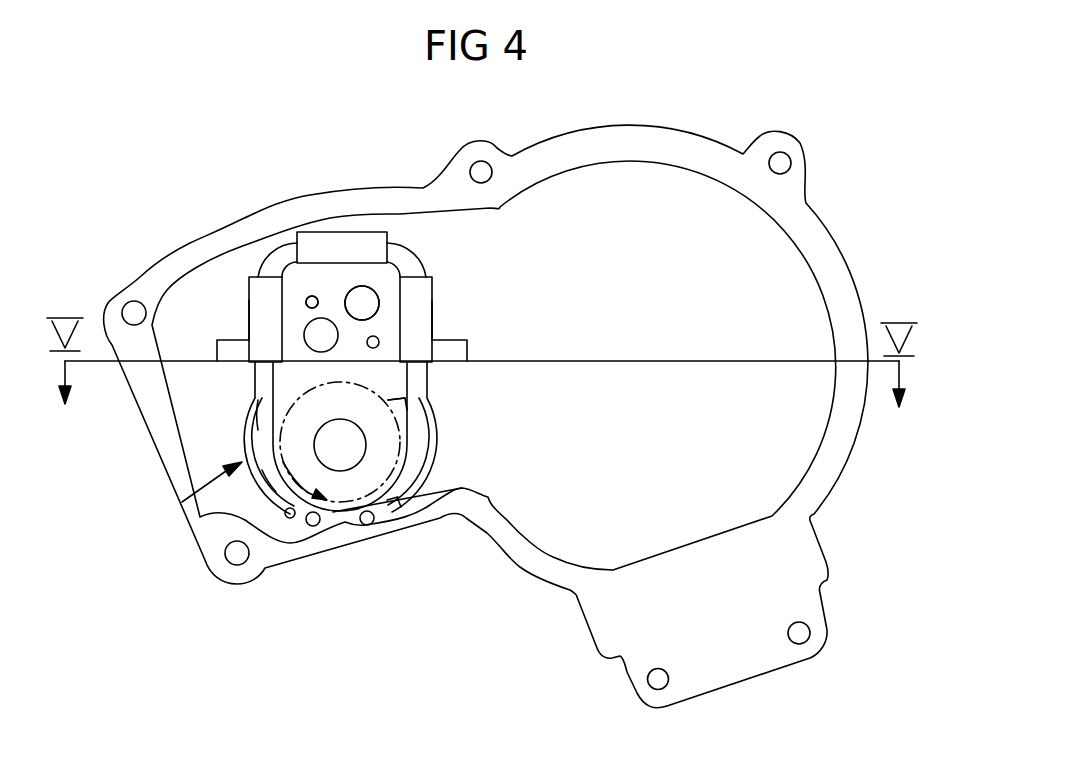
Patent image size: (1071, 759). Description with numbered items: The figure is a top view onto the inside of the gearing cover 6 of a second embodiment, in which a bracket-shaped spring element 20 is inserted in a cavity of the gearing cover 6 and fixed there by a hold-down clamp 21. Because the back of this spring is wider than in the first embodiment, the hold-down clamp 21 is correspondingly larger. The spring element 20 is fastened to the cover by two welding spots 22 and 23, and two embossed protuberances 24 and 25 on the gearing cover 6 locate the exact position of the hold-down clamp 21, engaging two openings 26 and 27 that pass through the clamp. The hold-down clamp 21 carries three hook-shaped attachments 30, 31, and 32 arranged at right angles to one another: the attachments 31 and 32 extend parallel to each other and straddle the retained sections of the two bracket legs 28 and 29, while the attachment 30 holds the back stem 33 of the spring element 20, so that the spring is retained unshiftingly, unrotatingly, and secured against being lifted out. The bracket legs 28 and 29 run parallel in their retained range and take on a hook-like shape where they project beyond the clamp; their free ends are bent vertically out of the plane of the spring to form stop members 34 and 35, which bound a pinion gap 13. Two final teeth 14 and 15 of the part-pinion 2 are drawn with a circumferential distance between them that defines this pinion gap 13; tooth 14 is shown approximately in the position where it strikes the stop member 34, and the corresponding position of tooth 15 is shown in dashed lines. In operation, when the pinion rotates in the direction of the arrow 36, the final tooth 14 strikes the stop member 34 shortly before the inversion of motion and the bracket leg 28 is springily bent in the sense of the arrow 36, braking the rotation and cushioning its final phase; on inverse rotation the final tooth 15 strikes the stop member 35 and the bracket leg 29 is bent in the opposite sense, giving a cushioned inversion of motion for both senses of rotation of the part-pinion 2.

The part-pinion 2 is at (342, 493).
The gearing cover 6 is at (157, 437).
The pinion gap 13 is at (323, 510).
The final tooth 14 is at (290, 513).
The final tooth 15 is at (420, 447).
The spring element 20 is at (182, 502).
The hold-down clamp 21 is at (232, 275).
The welding spot 22 is at (262, 364).
The welding spot 23 is at (383, 276).
The embossed protuberance 24 is at (310, 303).
The embossed protuberance 25 is at (378, 342).
The opening 26 is at (312, 296).
The opening 27 is at (378, 347).
The bracket leg 28 is at (257, 407).
The bracket leg 29 is at (405, 398).
The hook-shaped attachment 30 is at (367, 232).
The hook-shaped attachment 31 is at (257, 308).
The hook-shaped attachment 32 is at (422, 303).
The back stem 33 is at (368, 298).
The stop member 34 is at (307, 527).
The stop member 35 is at (373, 527).
The arrow 36 is at (278, 475).